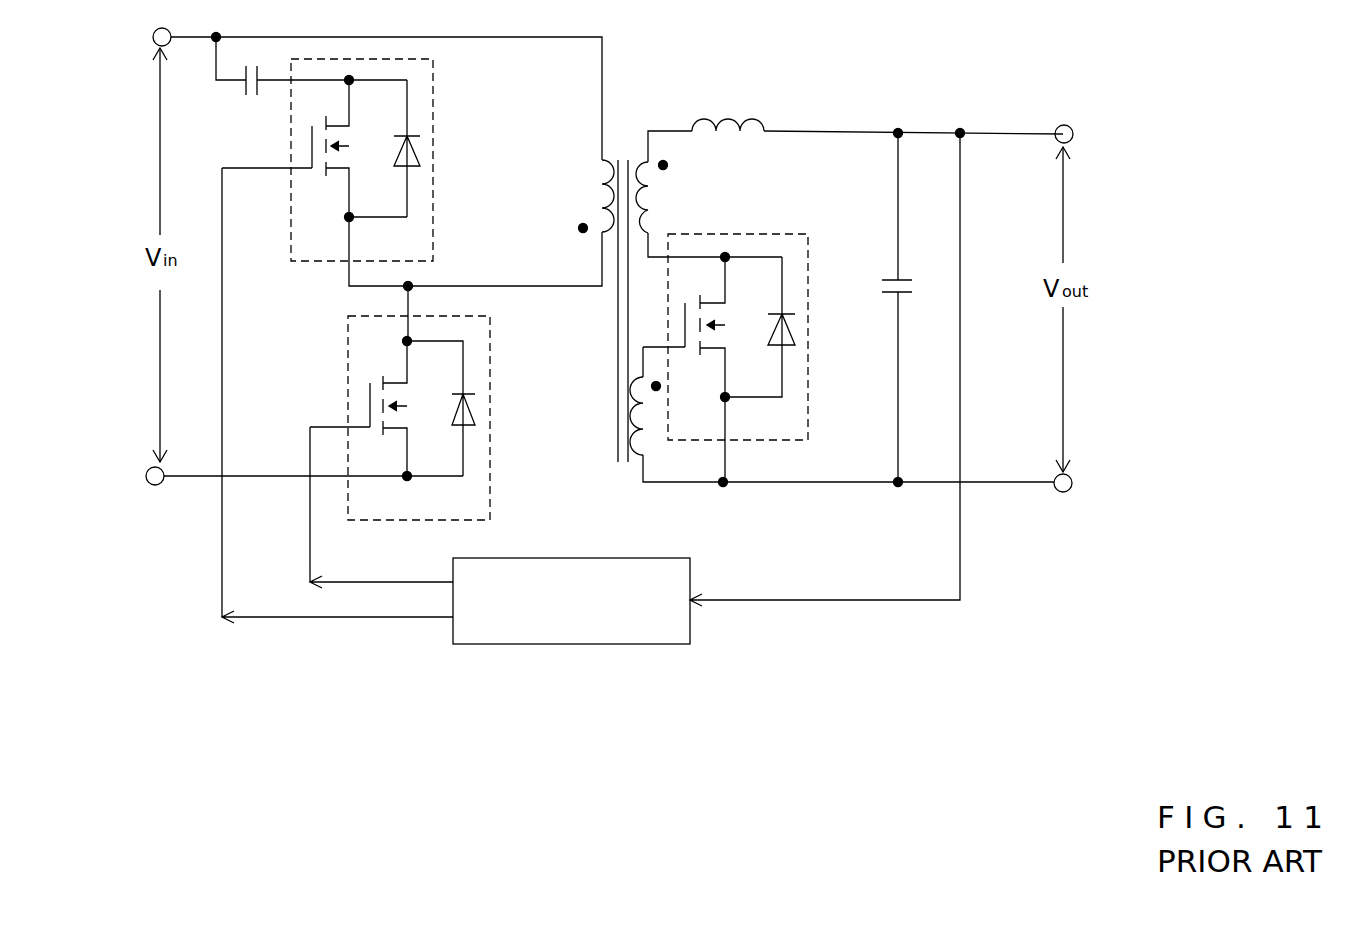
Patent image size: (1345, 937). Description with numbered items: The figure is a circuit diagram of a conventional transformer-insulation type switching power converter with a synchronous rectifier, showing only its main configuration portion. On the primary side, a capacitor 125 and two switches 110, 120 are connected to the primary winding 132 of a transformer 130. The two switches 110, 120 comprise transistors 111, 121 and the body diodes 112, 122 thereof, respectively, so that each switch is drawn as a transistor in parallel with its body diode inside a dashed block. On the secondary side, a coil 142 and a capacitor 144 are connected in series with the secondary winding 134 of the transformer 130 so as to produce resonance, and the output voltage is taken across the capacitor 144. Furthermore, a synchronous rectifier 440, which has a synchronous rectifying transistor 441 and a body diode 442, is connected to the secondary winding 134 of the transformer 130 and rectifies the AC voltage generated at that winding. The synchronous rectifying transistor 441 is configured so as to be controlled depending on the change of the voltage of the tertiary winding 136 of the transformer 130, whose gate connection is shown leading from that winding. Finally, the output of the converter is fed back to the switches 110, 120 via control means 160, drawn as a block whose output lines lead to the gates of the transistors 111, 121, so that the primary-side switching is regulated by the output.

The switch 110 is at (496, 342).
The transistor 111 is at (373, 386).
The body diode 112 is at (478, 409).
The switch 120 is at (438, 92).
The transistor 121 is at (313, 173).
The body diode 122 is at (416, 152).
The capacitor 125 is at (247, 97).
The transformer 130 is at (629, 160).
The primary winding 132 is at (598, 193).
The secondary winding 134 is at (654, 195).
The tertiary winding 136 is at (646, 441).
The coil 142 is at (736, 116).
The capacitor 144 is at (910, 286).
The control means 160 is at (622, 558).
The synchronous rectifier 440 is at (811, 248).
The synchronous rectifying transistor 441 is at (693, 352).
The body diode 442 is at (797, 328).